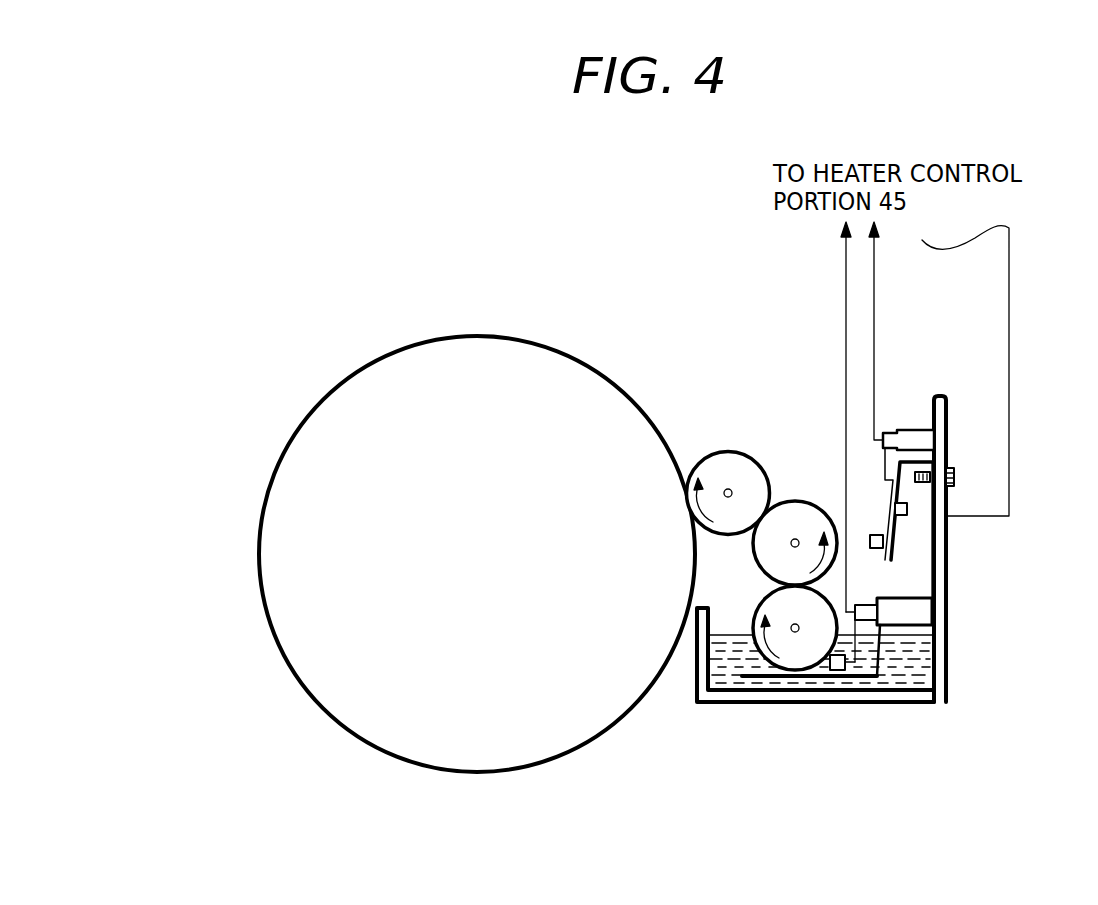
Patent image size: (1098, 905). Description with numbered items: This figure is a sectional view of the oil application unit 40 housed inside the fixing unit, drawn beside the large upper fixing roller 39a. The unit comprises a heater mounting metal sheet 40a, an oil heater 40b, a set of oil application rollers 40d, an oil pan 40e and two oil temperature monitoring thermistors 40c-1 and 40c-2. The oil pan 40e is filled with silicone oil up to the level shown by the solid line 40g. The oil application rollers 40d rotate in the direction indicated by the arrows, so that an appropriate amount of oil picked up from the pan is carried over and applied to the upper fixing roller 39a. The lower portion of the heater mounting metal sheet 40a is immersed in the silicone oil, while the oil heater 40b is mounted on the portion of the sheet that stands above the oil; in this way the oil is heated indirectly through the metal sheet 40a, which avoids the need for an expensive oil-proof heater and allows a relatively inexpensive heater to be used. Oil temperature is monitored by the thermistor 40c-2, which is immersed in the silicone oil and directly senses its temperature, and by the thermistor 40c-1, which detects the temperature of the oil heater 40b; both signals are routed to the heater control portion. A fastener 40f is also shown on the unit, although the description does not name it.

The upper fixing roller 39a is at (382, 358).
The oil application unit 40 is at (1097, 431).
The heater mounting metal sheet 40a is at (798, 678).
The oil heater 40b is at (888, 542).
The thermistor 40c-1 is at (877, 530).
The thermistor 40c-2 is at (850, 668).
The oil application rollers 40d is at (836, 503).
The oil pan 40e is at (932, 612).
The screw 40f is at (955, 475).
The solid line indicating oil level 40g is at (915, 637).